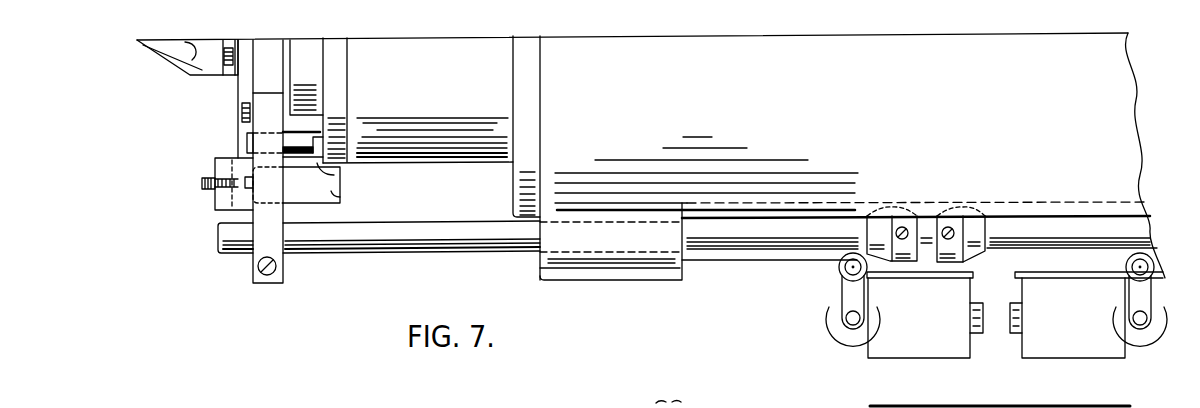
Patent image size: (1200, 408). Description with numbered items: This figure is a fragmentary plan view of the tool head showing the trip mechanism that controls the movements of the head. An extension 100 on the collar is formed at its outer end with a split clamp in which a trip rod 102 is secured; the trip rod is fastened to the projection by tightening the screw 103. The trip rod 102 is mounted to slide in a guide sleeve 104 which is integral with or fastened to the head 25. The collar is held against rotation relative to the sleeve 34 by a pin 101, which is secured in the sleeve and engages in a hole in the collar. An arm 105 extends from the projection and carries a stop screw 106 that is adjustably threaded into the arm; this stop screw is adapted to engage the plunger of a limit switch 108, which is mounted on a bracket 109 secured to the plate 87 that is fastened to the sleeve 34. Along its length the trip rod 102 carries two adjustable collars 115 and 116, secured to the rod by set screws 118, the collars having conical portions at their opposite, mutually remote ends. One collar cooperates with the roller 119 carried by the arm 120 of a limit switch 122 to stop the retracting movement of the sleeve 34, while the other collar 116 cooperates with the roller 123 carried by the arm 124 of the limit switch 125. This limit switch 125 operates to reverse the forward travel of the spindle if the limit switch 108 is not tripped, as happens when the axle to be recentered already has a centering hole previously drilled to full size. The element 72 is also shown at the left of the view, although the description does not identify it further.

The head 25 is at (651, 155).
The sleeve 34 is at (448, 150).
The blade 72 is at (176, 64).
The plate 87 is at (330, 45).
The extension 100 is at (277, 208).
The pin 101 is at (249, 140).
The trip rod 102 is at (458, 238).
The screw 103 is at (283, 271).
The guide sleeve 104 is at (678, 262).
The arm 105 is at (222, 160).
The stop screw 106 is at (205, 190).
The limit switch 108 is at (340, 197).
The bracket 109 is at (334, 176).
The adjustable collar 115 is at (972, 260).
The adjustable collar 116 is at (901, 226).
The set screws 118 is at (948, 226).
The roller 119 is at (1126, 263).
The arm 120 is at (1152, 287).
The limit switch 122 is at (1075, 349).
The roller 123 is at (838, 264).
The arm 124 is at (845, 289).
The limit switch 125 is at (915, 351).